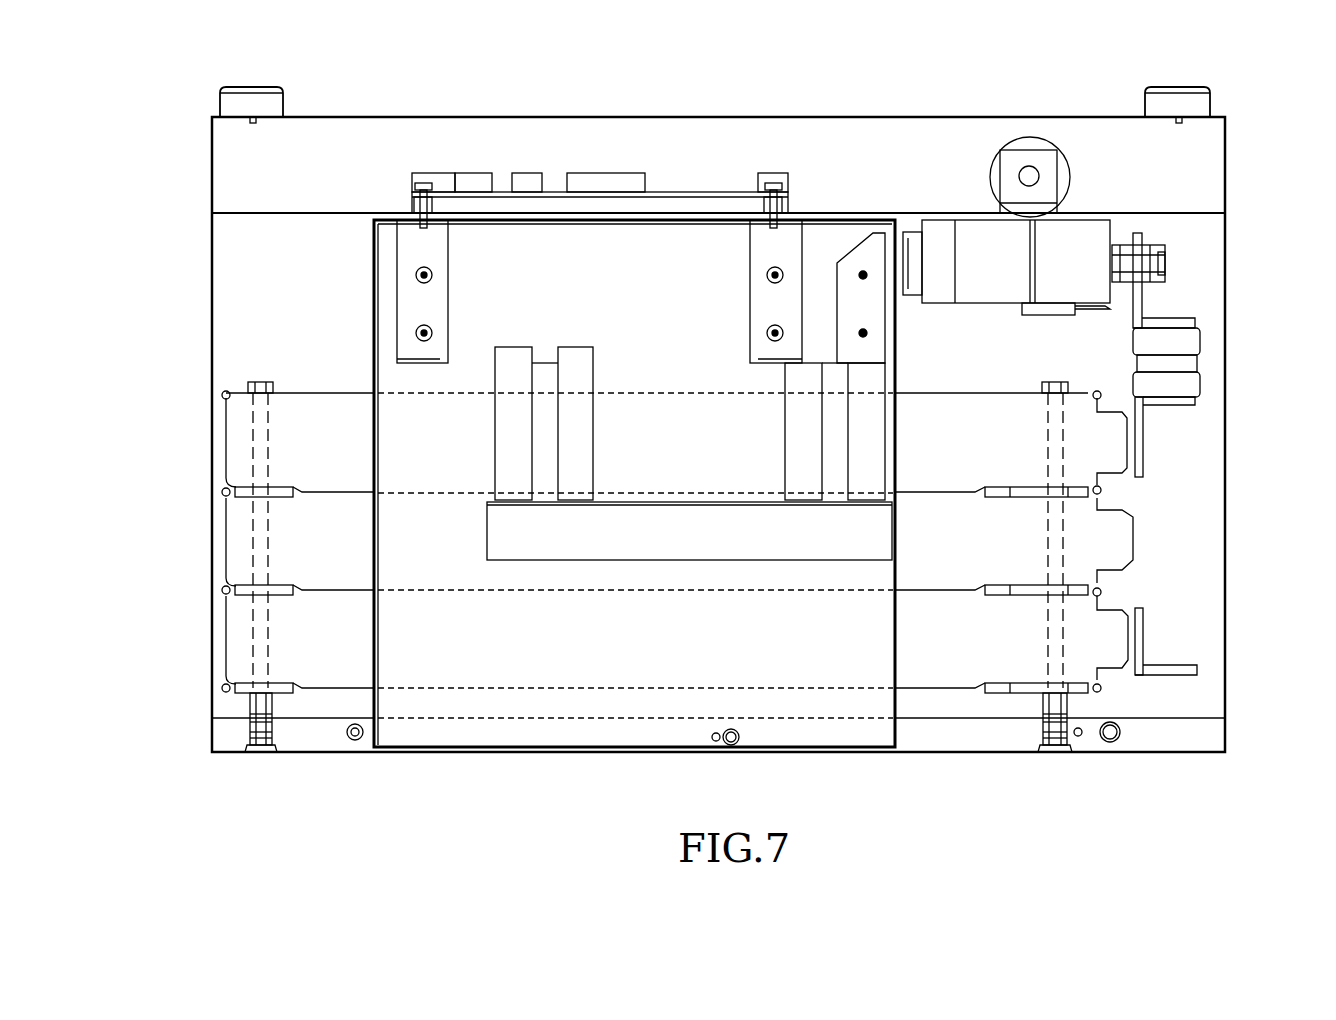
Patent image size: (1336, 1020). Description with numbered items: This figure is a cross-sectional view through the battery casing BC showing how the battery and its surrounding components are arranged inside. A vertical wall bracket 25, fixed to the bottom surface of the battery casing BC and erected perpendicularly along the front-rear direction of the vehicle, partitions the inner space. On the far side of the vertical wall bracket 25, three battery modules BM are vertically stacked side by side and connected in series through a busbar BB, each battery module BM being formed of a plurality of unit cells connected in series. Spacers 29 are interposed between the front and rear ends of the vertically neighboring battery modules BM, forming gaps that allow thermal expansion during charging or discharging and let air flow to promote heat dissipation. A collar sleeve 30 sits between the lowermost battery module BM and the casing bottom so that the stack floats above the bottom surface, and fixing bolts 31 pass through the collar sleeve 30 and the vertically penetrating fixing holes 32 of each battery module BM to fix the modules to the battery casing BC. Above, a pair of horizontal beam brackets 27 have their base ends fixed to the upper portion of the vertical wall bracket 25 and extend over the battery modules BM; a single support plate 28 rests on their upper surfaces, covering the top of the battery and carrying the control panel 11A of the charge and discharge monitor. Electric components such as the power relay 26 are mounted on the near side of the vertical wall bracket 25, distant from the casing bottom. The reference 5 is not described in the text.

The power conversion device 5 is at (1052, 98).
The control panel 11A is at (607, 184).
The vertical wall bracket 25 is at (388, 327).
The power relay 26 is at (800, 430).
The horizontal beam bracket 27 is at (428, 243).
The support plate 28 is at (725, 193).
The spacer 29 is at (280, 488).
The collar sleeve 30 is at (272, 716).
The fixing bolt 31 is at (260, 380).
The fixing hole 32 is at (255, 454).
The battery casing BC is at (442, 117).
The busbar BB is at (1140, 458).
The battery module BM is at (335, 563).